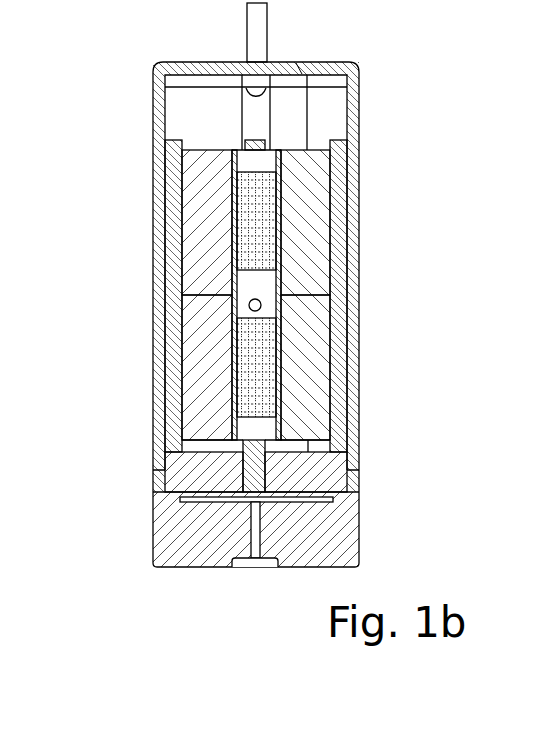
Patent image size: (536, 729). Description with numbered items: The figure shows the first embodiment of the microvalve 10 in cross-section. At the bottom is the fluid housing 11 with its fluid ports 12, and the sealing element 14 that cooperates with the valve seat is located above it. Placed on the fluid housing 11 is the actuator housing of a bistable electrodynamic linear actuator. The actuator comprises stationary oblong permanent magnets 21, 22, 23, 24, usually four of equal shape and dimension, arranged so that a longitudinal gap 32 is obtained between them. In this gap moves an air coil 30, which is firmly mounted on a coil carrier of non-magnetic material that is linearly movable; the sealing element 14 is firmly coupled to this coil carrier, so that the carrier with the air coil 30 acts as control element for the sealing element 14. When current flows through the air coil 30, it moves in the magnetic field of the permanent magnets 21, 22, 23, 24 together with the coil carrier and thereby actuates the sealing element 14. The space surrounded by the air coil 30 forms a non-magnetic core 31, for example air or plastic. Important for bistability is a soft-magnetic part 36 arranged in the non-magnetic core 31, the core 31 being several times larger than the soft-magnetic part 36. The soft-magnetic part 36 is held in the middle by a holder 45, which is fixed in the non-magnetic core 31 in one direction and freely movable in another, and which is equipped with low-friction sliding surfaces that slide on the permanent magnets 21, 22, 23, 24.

The microvalve 10 is at (84, 119).
The fluid housing 11 is at (173, 532).
The fluid ports 12 is at (247, 568).
The sealing element 14 is at (345, 500).
The permanent magnet 21 is at (340, 375).
The permanent magnet 22 is at (340, 208).
The permanent magnet 23 is at (158, 181).
The permanent magnet 24 is at (195, 370).
The air coil 30 is at (284, 175).
The non-magnetic core 31 is at (283, 276).
The longitudinal gap 32 is at (160, 448).
The soft-magnetic part 36 is at (232, 302).
The holder 45 is at (256, 367).